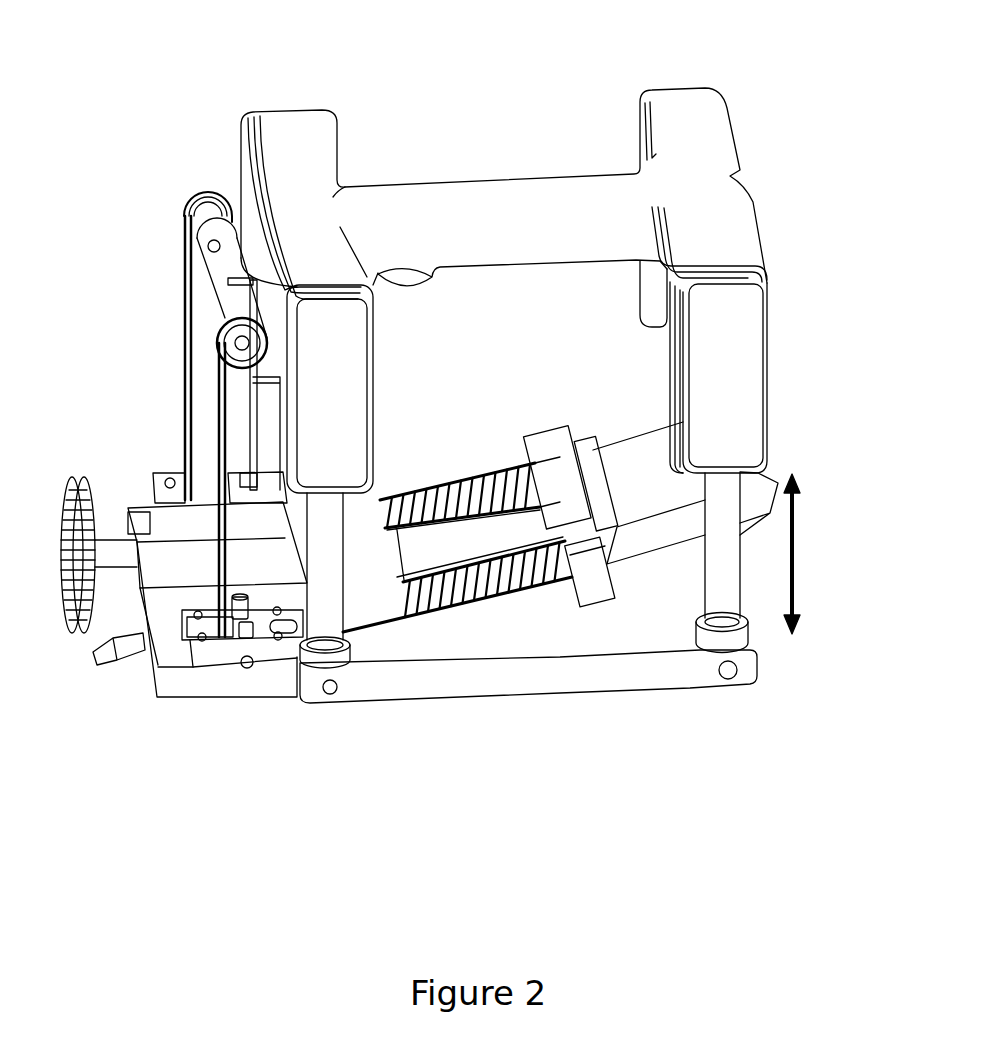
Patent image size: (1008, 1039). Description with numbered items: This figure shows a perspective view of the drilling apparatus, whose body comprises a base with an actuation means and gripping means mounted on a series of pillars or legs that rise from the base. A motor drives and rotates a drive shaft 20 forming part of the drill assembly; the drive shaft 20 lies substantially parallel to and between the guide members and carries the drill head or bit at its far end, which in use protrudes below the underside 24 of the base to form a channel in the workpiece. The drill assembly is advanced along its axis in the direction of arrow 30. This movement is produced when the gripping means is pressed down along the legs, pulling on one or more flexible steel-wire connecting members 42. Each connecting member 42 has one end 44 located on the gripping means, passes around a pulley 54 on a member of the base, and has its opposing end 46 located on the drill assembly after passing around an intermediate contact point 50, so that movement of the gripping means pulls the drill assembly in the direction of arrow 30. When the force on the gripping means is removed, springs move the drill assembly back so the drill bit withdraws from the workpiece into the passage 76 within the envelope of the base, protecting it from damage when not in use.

The end of connecting member 44 is at (290, 293).
The pulley 54 is at (184, 258).
The connecting member 42 is at (184, 288).
The intermediate contact point 50 is at (240, 640).
The passage 76 is at (330, 572).
The drive shaft 20 is at (448, 537).
The opposing end of connecting member 46 is at (568, 592).
The underside of the base 24 is at (370, 703).
The arrow 30 is at (794, 556).